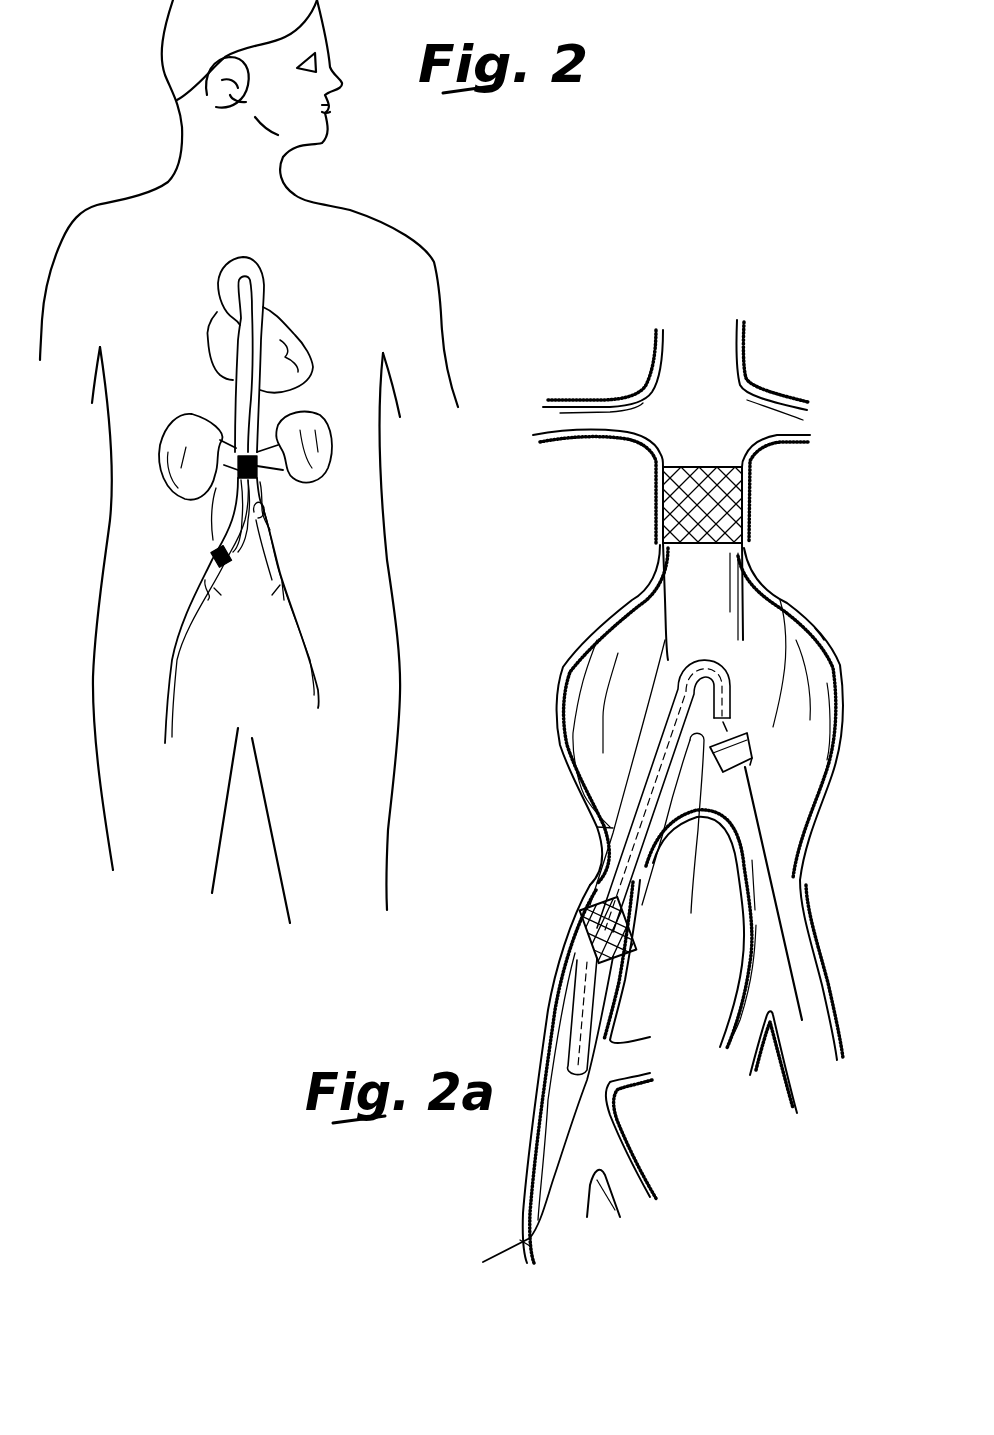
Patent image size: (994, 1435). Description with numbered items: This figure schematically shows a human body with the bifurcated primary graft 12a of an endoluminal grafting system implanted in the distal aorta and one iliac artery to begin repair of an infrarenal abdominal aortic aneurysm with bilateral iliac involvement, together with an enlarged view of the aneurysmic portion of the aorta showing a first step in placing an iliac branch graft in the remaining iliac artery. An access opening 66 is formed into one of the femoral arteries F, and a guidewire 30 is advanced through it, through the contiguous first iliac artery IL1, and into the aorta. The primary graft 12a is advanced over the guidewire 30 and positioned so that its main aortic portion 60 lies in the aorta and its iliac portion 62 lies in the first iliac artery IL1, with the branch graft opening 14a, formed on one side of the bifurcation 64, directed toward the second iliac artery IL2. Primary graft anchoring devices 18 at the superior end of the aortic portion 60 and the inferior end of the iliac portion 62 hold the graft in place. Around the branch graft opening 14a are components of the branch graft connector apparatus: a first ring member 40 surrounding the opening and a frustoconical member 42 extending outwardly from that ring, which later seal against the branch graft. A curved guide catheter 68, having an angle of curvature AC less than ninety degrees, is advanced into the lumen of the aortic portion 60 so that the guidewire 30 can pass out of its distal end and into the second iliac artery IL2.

In FIG. 2, the bifurcated primary graft 12a is at (247, 491).
In FIG. 2A, the branch graft opening 14a is at (750, 767).
In FIG. 2, the primary graft anchoring device 18 is at (247, 467).
In FIG. 2A, the primary graft anchoring device 18 is at (720, 500).
In FIG. 2A, the guidewire 30 is at (527, 1248).
In FIG. 2A, the first ring member 40 is at (750, 733).
In FIG. 2, the frustoconical member 42 is at (265, 516).
In FIG. 2A, the frustoconical member 42 is at (752, 750).
In FIG. 2, the main aortic portion 60 is at (267, 479).
In FIG. 2A, the main aortic portion 60 is at (820, 637).
In FIG. 2, the iliac portion 62 is at (210, 531).
In FIG. 2A, the iliac portion 62 is at (613, 828).
In FIG. 2, the bifurcation 64 is at (272, 530).
In FIG. 2A, the bifurcation 64 is at (674, 838).
In FIG. 2A, the access opening 66 is at (527, 1250).
In FIG. 2A, the curved guide catheter 68 is at (687, 667).
In FIG. 2A, the angle of curvature AC is at (716, 648).
In FIG. 2A, the femoral artery F is at (537, 1212).
In FIG. 2A, the first iliac artery IL1 is at (563, 977).
In FIG. 2A, the second iliac artery IL2 is at (793, 903).